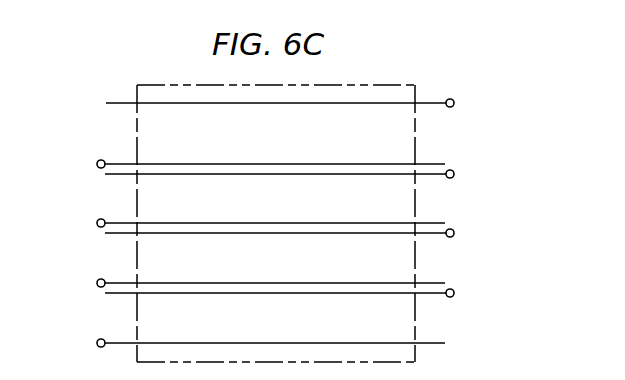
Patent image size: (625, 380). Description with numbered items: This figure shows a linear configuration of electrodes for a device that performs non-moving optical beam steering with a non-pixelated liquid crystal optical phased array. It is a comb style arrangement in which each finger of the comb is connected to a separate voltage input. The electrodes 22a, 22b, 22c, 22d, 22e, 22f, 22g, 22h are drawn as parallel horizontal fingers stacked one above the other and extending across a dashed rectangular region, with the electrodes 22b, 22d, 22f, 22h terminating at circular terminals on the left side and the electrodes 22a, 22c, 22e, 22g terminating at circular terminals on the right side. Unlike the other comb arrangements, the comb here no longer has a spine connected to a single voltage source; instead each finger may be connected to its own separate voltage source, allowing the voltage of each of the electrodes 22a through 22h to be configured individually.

The electrode 22a is at (454, 106).
The electrode 22b is at (97, 162).
The electrode 22c is at (454, 177).
The electrode 22d is at (97, 221).
The electrode 22e is at (454, 236).
The electrode 22f is at (97, 281).
The electrode 22g is at (454, 296).
The electrode 22h is at (97, 341).